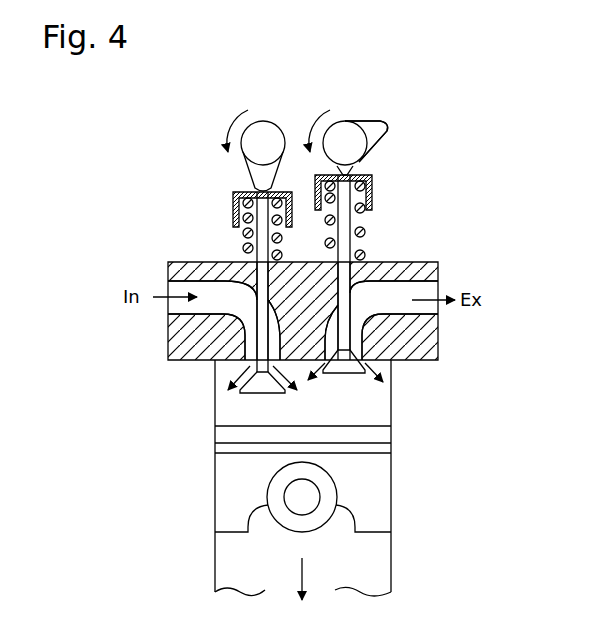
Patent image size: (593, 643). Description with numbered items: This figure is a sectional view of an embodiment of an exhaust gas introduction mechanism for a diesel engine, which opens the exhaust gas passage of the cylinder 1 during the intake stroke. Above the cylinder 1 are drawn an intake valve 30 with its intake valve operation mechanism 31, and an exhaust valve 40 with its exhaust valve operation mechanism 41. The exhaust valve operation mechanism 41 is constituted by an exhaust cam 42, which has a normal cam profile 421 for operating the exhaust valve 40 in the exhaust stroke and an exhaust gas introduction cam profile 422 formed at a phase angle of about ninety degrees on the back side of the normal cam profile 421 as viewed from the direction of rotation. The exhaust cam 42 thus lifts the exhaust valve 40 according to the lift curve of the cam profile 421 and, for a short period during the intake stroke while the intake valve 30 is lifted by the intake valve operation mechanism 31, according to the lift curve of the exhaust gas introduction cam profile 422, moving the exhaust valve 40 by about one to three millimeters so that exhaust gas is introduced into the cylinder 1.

The cylinder 1 is at (372, 410).
The intake valve 30 is at (263, 240).
The intake valve operation mechanism 31 is at (270, 118).
The exhaust valve 40 is at (350, 222).
The exhaust valve operation mechanism 41 is at (388, 115).
The exhaust cam 42 is at (347, 116).
The normal cam profile 421 is at (390, 130).
The exhaust gas introduction cam profile 422 is at (358, 173).